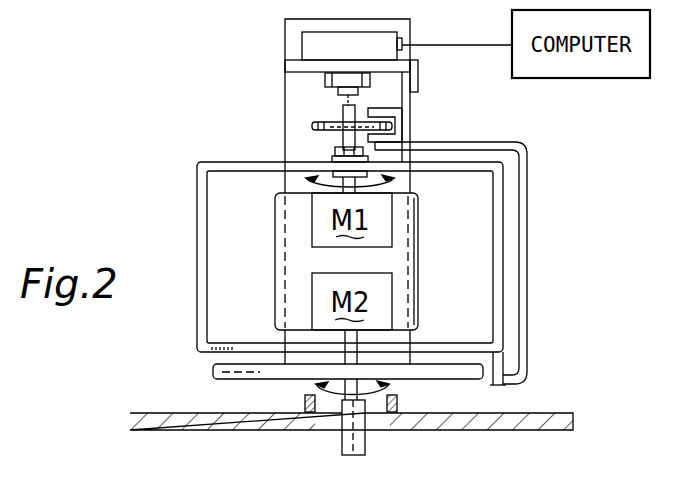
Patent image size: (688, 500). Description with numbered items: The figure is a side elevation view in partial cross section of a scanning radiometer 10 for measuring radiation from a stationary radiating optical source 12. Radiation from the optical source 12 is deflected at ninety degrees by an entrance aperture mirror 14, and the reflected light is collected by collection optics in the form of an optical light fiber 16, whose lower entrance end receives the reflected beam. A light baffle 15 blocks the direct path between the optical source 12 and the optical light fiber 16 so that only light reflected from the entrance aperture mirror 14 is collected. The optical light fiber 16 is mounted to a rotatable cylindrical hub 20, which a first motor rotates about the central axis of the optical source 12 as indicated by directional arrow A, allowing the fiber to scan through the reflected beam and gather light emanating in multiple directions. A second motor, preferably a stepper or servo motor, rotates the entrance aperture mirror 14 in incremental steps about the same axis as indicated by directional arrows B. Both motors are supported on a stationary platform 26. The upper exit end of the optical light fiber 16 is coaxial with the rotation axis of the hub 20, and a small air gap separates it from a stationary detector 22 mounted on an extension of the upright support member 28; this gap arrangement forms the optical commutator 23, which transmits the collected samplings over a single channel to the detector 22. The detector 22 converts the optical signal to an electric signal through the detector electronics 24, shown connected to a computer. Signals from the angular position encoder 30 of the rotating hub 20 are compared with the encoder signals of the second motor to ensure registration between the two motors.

The scanning radiometer 10 is at (563, 173).
The radiating optical source 12 is at (344, 445).
The entrance aperture mirror 14 is at (223, 379).
The light baffle 15 is at (305, 407).
The optical light fiber 16 is at (527, 263).
The rotatable hub 20 is at (493, 233).
The detector 22 is at (340, 92).
The optical commutator 23 is at (334, 101).
The detector electronics 24 is at (312, 42).
The stationary platform 26 is at (520, 413).
The upright support member 28 is at (286, 134).
The angular position encoder 30 is at (400, 119).
The directional arrow A— A is at (396, 178).
The directional arrows B— B is at (397, 389).